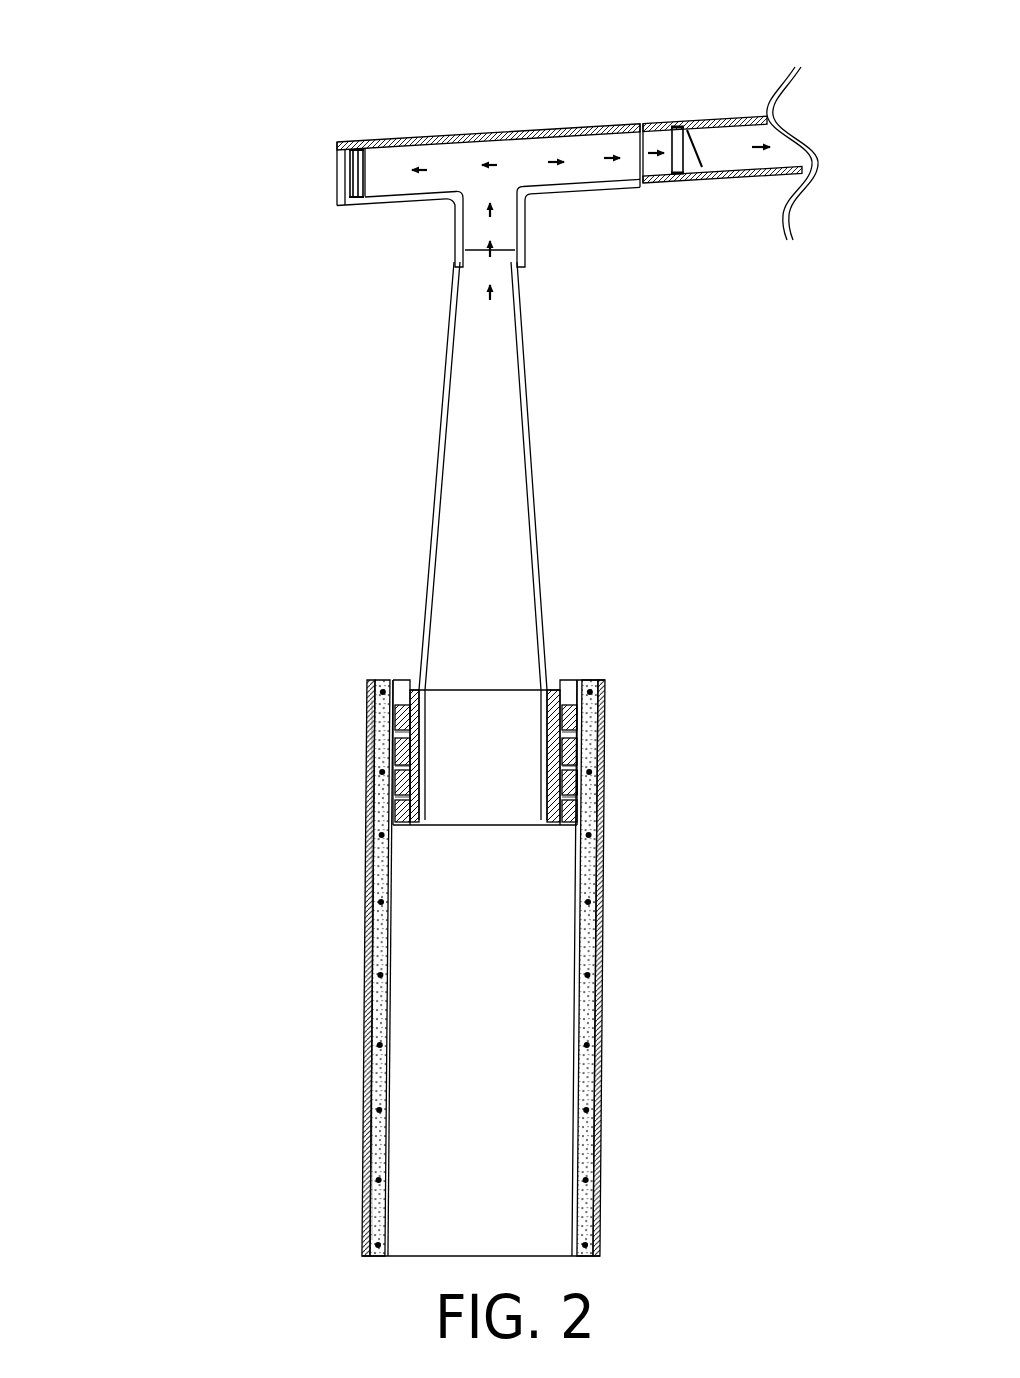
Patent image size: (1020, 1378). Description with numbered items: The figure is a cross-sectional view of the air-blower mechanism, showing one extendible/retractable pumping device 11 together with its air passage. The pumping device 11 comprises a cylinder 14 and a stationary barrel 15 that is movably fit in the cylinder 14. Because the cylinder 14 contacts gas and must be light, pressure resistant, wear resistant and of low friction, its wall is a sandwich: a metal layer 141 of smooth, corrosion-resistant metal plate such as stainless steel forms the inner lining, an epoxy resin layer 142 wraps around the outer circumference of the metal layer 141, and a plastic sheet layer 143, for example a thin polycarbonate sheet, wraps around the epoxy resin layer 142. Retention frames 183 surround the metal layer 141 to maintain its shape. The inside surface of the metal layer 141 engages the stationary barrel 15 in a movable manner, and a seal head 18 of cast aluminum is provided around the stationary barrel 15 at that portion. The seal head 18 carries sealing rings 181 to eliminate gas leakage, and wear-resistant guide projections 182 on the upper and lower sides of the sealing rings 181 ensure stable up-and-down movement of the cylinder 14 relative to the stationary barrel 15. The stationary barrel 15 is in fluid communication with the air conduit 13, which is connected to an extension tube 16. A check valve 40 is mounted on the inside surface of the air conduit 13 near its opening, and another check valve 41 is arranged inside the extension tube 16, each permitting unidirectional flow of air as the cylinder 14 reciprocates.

The extendible/retractable pumping device 11 is at (677, 555).
The air conduit 13 is at (488, 132).
The cylinder 14 is at (615, 1088).
The stationary barrel 15 is at (525, 460).
The extension tube 16 is at (732, 177).
The seal head 18 is at (461, 751).
The check valve 40 is at (372, 172).
The check valve 41 is at (695, 132).
The metal layer 141 is at (570, 716).
The epoxy resin layer 142 is at (572, 716).
The plastic sheet layer 143 is at (603, 778).
The sealing ring 181 is at (603, 753).
The guide projection 182 is at (598, 700).
The retention frame 183 is at (367, 837).